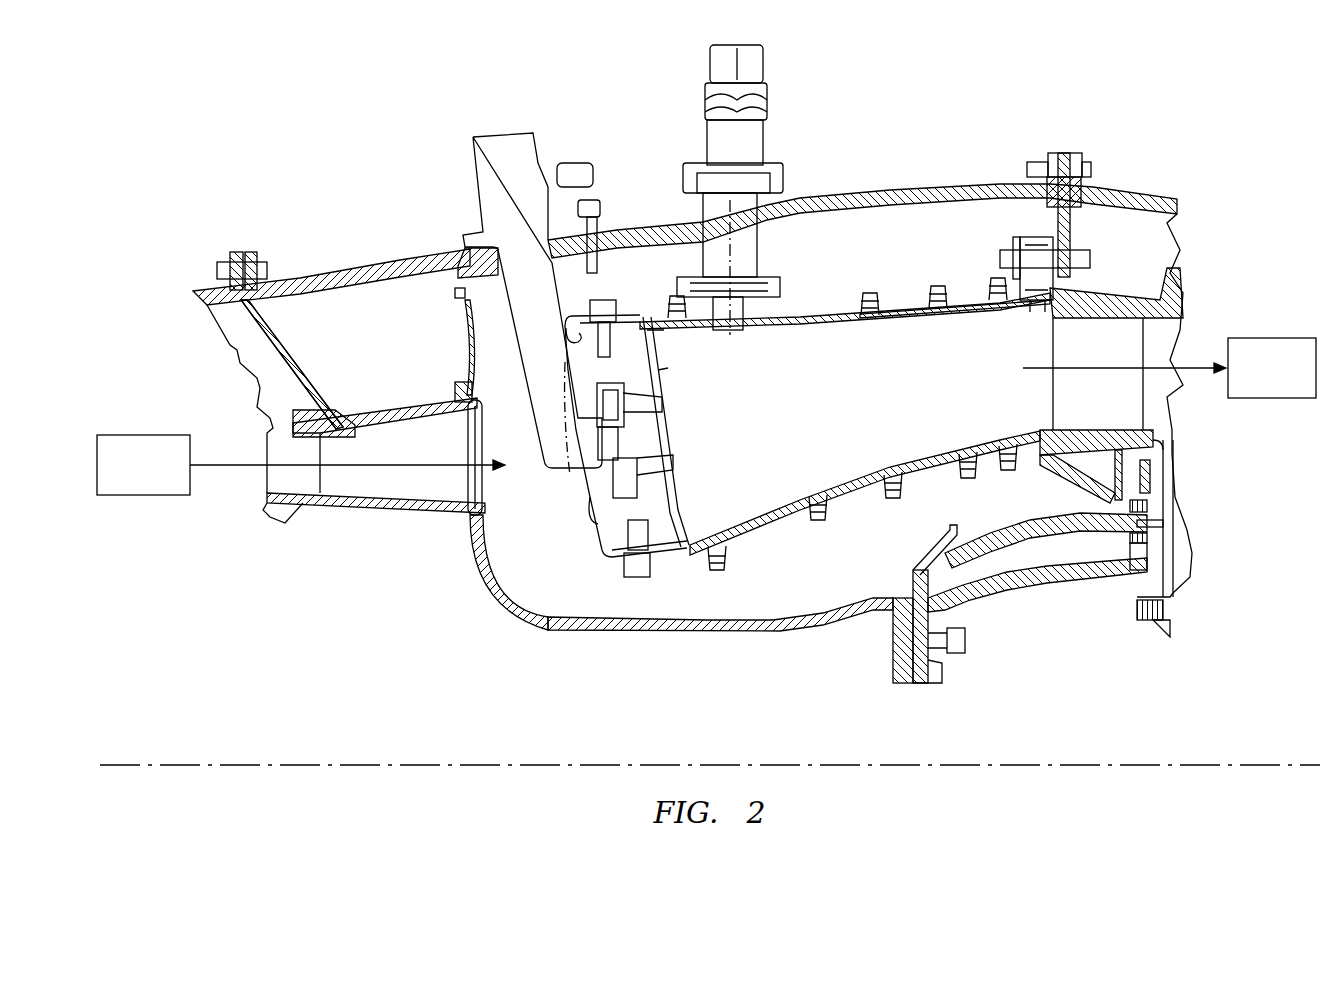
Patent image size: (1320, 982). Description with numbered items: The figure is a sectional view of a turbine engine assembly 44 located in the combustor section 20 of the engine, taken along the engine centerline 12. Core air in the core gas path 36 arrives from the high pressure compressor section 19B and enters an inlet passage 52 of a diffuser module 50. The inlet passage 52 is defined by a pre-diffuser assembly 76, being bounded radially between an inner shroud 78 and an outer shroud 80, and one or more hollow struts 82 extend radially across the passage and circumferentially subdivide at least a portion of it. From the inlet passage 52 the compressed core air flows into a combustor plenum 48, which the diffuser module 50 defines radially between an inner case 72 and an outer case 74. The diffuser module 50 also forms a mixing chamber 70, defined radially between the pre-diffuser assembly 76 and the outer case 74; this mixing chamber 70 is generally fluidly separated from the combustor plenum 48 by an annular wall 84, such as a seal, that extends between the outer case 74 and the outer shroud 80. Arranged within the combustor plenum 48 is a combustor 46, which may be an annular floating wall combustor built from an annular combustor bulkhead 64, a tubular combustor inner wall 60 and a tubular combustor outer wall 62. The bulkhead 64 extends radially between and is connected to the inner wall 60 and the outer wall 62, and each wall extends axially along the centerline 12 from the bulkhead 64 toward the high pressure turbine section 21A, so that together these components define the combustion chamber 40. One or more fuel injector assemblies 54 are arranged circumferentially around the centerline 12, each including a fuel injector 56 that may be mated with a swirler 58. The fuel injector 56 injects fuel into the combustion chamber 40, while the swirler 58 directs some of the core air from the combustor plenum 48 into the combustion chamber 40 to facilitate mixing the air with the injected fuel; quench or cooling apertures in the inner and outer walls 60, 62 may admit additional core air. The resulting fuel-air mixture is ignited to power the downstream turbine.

The centerline 12 is at (1072, 758).
The high pressure compressor (HPC) section 19B is at (122, 478).
The combustor section 20 is at (983, 92).
The high pressure turbine (HPT) section 21A is at (1251, 381).
The core gas path 36 is at (1197, 360).
The combustion chamber 40 is at (828, 413).
The turbine engine assembly 44 is at (230, 128).
The combustor 46 is at (840, 302).
The combustor plenum 48 is at (926, 260).
The diffuser module 50 is at (366, 270).
The inlet passage 52 is at (398, 493).
The fuel injector assembly 54 is at (558, 488).
The fuel injector 56 is at (473, 158).
The swirler 58 is at (664, 442).
The combustor inner wall 60 is at (940, 447).
The combustor outer wall 62 is at (928, 320).
The combustor bulkhead 64 is at (682, 497).
The mixing chamber 70 is at (366, 360).
The inner case 72 is at (697, 634).
The outer case 74 is at (642, 228).
The pre-diffuser assembly 76 is at (447, 523).
The inner shroud 78 is at (333, 505).
The outer shroud 80 is at (350, 422).
The hollow strut 82 is at (430, 432).
The annular wall 84 is at (476, 350).